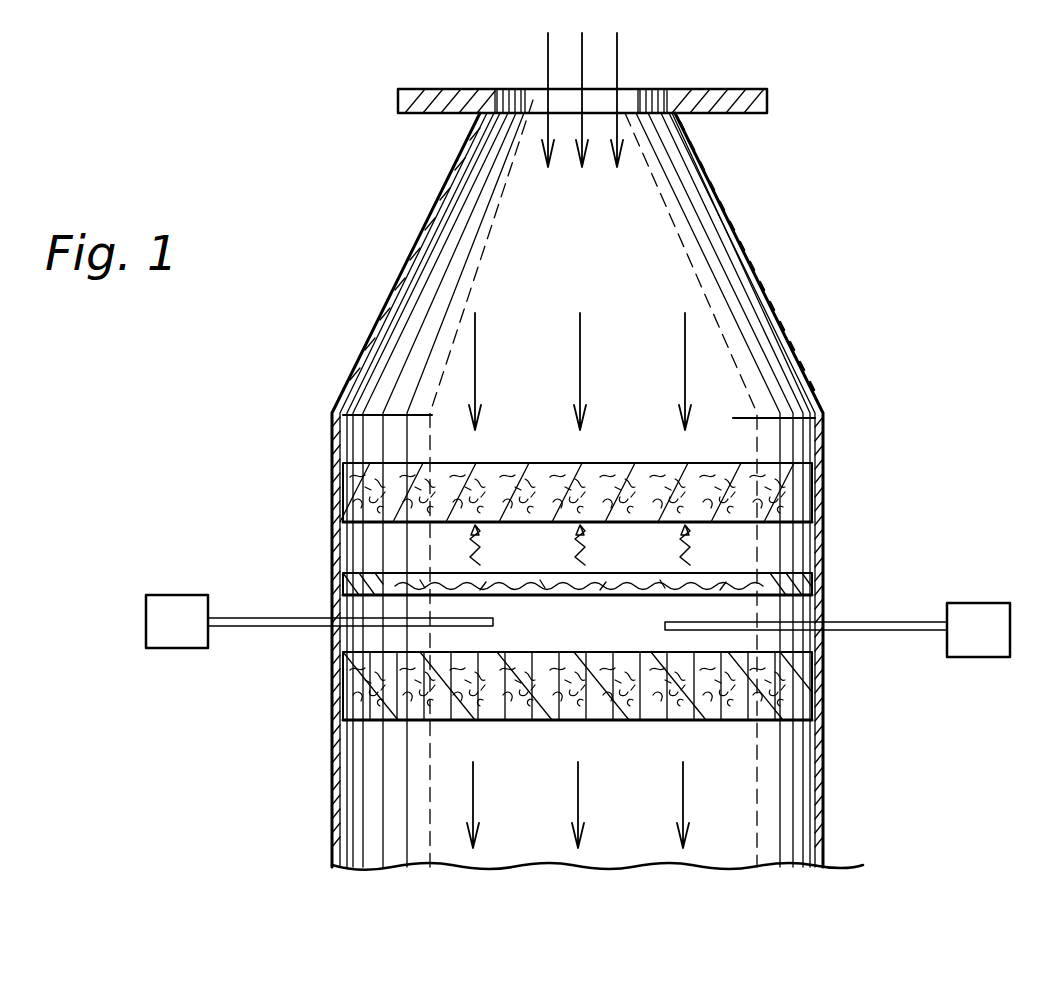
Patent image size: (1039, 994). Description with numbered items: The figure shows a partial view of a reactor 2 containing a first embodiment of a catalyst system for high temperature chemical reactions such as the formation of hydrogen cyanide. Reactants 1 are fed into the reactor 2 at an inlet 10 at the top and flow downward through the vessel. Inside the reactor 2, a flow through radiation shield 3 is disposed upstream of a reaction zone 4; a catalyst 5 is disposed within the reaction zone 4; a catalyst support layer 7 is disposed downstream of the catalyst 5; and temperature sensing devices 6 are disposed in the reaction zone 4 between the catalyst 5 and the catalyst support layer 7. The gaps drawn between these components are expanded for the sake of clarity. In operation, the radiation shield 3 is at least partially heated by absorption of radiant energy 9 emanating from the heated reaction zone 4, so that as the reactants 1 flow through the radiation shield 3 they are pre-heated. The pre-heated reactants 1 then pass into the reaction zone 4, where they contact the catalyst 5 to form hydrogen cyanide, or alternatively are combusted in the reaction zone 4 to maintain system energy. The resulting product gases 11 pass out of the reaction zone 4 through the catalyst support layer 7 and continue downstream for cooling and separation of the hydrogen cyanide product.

The reactants 1 is at (628, 80).
The reactor 2 is at (332, 805).
The flow through radiation shield 3 is at (795, 495).
The reaction zone 4 is at (345, 606).
The catalyst 5 is at (792, 593).
The temperature sensing devices 6 is at (185, 635).
The catalyst support layer 7 is at (348, 667).
The radiant energy 9 is at (372, 553).
The inlet 10 is at (527, 120).
The product gases 11 is at (690, 803).